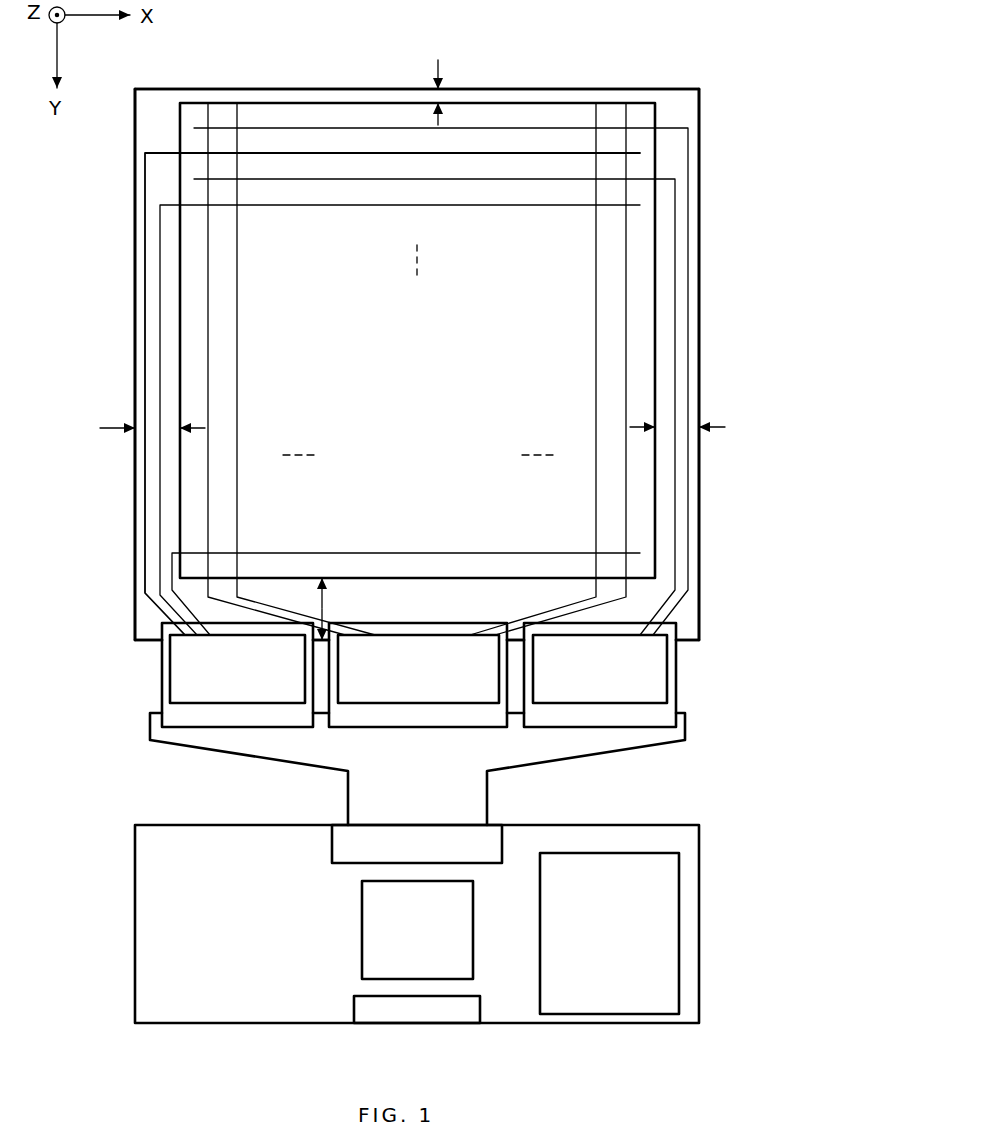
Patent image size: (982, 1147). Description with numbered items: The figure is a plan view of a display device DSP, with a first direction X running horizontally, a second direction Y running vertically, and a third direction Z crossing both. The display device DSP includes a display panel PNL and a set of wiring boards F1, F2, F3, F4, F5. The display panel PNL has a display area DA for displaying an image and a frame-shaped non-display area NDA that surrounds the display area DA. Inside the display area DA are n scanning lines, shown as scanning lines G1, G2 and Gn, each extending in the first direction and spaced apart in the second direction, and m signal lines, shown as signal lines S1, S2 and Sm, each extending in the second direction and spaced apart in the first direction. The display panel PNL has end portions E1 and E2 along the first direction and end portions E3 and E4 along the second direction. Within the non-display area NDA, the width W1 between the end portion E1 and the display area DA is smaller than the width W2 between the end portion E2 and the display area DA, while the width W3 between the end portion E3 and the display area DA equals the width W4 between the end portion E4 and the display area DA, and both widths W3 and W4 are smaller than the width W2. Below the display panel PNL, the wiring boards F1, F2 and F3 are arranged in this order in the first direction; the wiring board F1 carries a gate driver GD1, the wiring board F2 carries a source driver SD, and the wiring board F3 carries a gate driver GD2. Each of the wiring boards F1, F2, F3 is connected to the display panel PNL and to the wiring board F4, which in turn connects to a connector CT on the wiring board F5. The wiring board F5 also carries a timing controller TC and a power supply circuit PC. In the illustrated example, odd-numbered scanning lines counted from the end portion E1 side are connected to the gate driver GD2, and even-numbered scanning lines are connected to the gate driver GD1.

The display device DSP is at (766, 103).
The display panel PNL is at (700, 82).
The display area DA is at (643, 303).
The non-display area NDA is at (696, 608).
The end portion E1 is at (537, 88).
The end portion E2 is at (321, 640).
The end portion E3 is at (133, 377).
The end portion E4 is at (701, 358).
The width W1 is at (441, 96).
The width W2 is at (330, 604).
The width W3 is at (160, 428).
The width W4 is at (680, 427).
The signal line S1 is at (209, 118).
The signal line S2 is at (238, 118).
The signal line Sm is at (627, 118).
The scanning line G1 is at (302, 128).
The scanning line G2 is at (352, 179).
The scanning line Gn is at (390, 553).
The wiring board F1 is at (161, 660).
The wiring board F2 is at (493, 727).
The wiring board F3 is at (677, 660).
The wiring board F4 is at (150, 729).
The wiring board F5 is at (135, 935).
The gate driver GD1 is at (170, 692).
The gate driver GD2 is at (667, 690).
The source driver SD is at (465, 703).
The connector CT is at (332, 848).
The timing controller TC is at (362, 935).
The power supply circuit PC is at (699, 930).